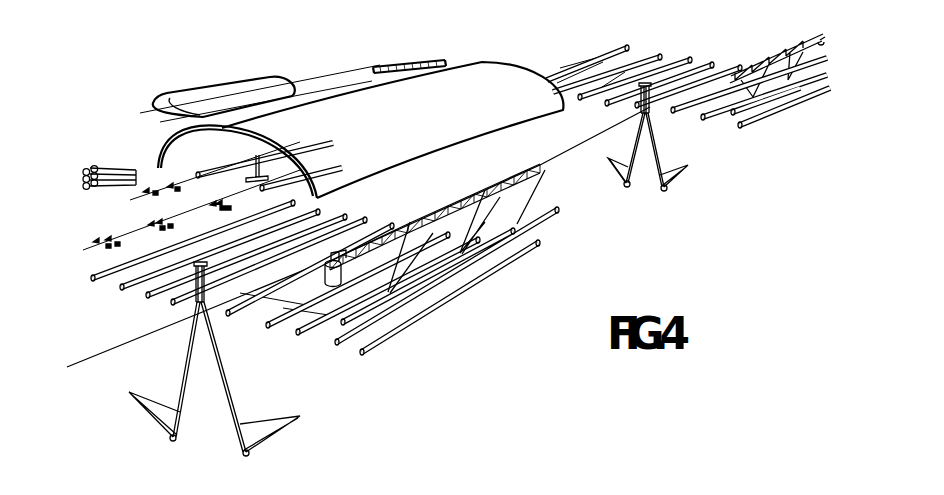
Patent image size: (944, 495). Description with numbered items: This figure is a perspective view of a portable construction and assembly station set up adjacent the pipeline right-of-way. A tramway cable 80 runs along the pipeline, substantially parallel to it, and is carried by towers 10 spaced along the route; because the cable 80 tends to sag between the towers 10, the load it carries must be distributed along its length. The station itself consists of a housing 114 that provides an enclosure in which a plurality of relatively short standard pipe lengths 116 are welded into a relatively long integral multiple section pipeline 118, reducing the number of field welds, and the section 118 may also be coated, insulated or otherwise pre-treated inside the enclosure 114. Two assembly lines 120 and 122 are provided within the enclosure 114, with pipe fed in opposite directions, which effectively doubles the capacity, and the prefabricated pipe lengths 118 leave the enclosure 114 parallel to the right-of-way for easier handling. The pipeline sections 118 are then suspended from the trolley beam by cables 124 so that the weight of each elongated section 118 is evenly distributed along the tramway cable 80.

The tower 10 is at (176, 341).
The tramway cable 80 is at (581, 144).
The housing 114 is at (478, 62).
The standard pipe lengths 116 is at (111, 167).
The multiple section pipeline 118 is at (191, 240).
The assembly line 120 is at (178, 186).
The assembly line 122 is at (142, 228).
The cables 124 is at (536, 197).